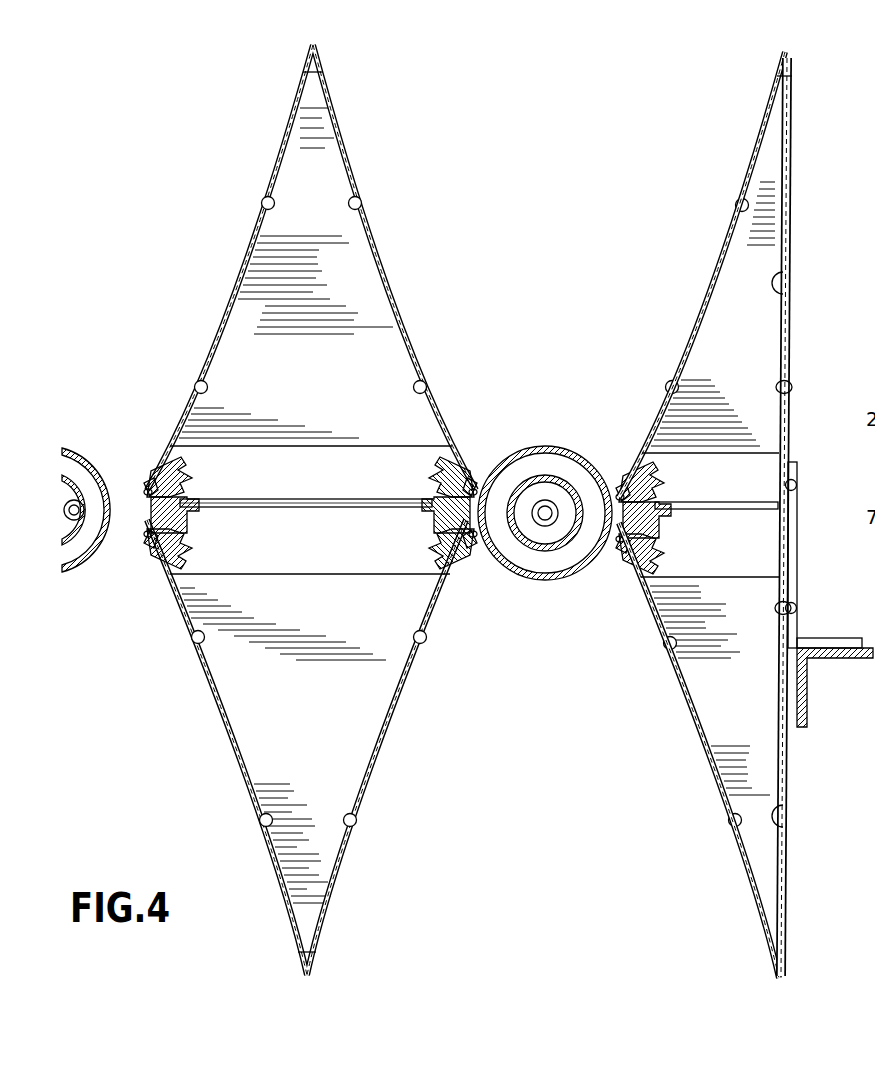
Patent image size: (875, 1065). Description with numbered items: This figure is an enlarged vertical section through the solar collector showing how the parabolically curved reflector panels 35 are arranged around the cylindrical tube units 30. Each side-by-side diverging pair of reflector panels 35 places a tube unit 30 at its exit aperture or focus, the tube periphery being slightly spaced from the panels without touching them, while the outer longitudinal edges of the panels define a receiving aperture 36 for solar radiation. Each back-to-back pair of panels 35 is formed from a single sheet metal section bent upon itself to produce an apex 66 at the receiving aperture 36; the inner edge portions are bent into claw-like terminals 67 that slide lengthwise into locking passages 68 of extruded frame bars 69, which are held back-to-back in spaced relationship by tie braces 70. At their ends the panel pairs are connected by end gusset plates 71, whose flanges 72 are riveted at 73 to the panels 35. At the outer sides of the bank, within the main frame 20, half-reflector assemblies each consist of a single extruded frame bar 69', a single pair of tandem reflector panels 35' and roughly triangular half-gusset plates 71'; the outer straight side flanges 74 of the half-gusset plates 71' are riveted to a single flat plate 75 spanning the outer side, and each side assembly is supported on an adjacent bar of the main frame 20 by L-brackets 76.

The main frame 20 is at (843, 663).
The tube unit 30 is at (101, 444).
The reflector panel 35 is at (311, 510).
The tandem reflector panel 35' is at (702, 515).
The receiving aperture 36 is at (376, 968).
The apex 66 is at (308, 47).
The claw-like terminal 67 is at (145, 481).
The locking passage 68 is at (182, 521).
The extruded frame bar 69 is at (310, 477).
The extruded frame bar 69' is at (669, 518).
The tie brace 70 is at (328, 501).
The end gusset plate 71 is at (311, 454).
The half-gusset plate 71' is at (738, 506).
The flange 72 is at (286, 160).
The rivet 73 is at (360, 200).
The outer straight side flange 74 is at (792, 286).
The flat plate 75 is at (792, 206).
The L-bracket 76 is at (797, 592).